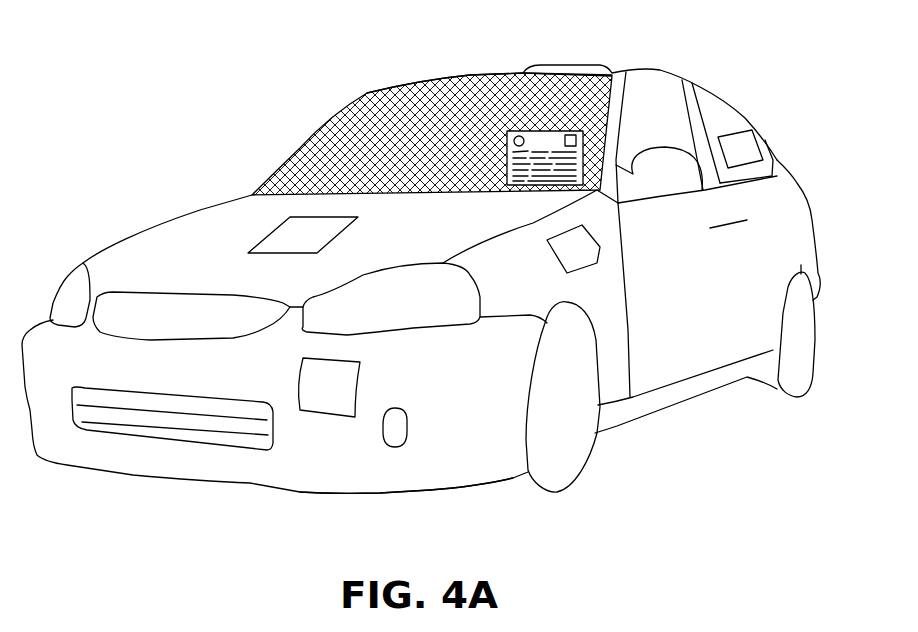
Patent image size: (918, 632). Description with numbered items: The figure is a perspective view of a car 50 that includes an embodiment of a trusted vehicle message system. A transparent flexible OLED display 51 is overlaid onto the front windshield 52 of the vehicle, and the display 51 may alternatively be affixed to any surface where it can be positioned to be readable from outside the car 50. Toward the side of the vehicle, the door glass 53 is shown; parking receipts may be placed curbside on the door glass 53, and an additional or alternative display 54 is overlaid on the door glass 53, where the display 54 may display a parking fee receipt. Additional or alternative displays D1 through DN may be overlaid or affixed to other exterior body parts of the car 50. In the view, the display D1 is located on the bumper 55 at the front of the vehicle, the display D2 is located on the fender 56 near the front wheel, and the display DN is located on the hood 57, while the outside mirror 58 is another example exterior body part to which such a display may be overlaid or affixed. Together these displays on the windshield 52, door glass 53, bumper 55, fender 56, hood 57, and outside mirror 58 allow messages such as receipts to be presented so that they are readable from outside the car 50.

The car 50 is at (123, 40).
The transparent flexible OLED display 51 is at (520, 187).
The front windshield 52 is at (407, 95).
The door glass 53 is at (723, 113).
The display 54 is at (753, 158).
The bumper 55 is at (372, 483).
The fender 56 is at (610, 383).
The hood 57 is at (182, 233).
The outside mirror 58 is at (645, 183).
The display DN is at (318, 247).
The display D1 is at (341, 395).
The display D2 is at (592, 261).